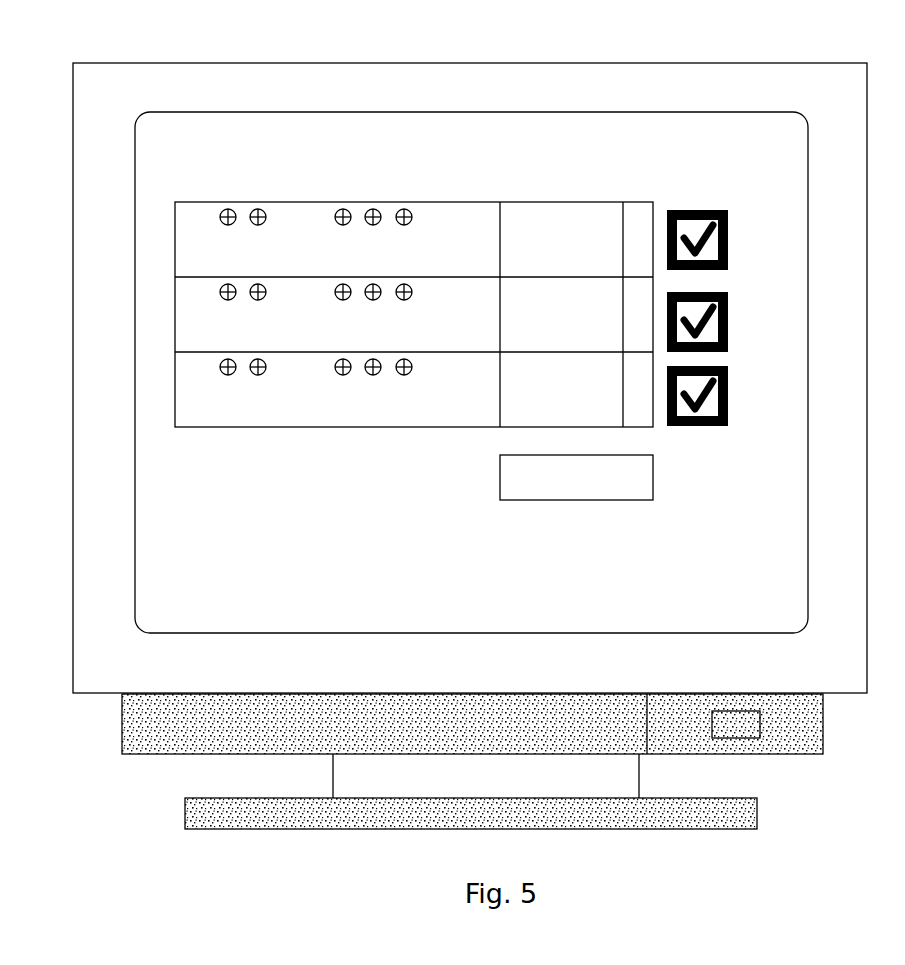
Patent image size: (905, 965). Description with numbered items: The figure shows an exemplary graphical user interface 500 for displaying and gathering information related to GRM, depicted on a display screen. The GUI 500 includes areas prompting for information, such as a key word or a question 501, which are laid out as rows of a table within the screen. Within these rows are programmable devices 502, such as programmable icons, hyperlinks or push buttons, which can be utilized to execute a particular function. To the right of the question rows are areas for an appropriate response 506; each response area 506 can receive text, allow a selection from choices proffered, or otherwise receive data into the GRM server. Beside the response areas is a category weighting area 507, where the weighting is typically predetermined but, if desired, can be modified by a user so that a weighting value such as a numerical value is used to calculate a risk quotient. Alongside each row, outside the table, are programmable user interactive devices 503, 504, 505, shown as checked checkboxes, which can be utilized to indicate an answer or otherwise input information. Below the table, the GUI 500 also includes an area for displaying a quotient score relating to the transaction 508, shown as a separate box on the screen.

The graphical user interface 500 is at (121, 40).
The key word or question area 501 is at (253, 247).
The programmable devices 502 is at (230, 209).
The programmable user interactive device 503 is at (718, 240).
The programmable user interactive device 504 is at (718, 322).
The programmable user interactive device 505 is at (718, 396).
The response area 506 is at (564, 241).
The category weighting area 507 is at (640, 241).
The quotient score area 508 is at (576, 477).